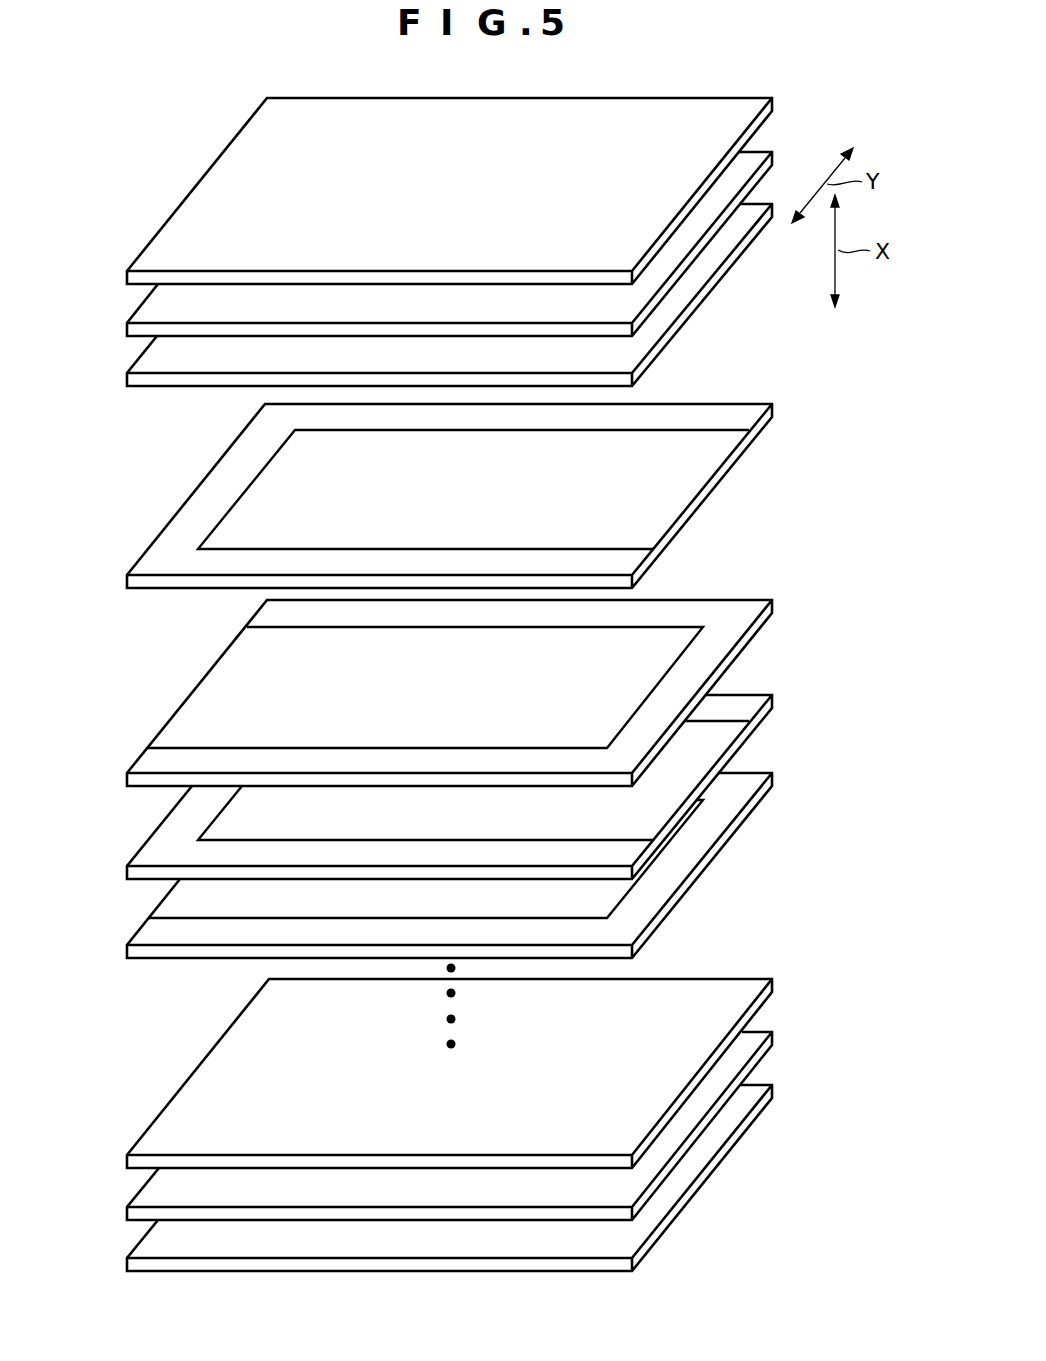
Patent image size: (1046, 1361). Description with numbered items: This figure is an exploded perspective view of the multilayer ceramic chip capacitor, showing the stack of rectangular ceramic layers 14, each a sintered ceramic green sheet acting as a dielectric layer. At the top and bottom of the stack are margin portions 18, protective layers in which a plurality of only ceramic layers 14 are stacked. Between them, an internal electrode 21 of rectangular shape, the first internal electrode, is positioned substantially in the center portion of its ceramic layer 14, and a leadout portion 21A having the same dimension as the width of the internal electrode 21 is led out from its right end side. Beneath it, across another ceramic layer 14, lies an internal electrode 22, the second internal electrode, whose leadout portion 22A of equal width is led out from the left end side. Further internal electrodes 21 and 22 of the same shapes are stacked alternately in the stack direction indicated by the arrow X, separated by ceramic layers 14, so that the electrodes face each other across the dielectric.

The ceramic layer 14 is at (455, 688).
The margin portion 18 is at (111, 263).
The internal electrode 21 is at (513, 622).
The leadout portion 21A is at (690, 484).
The internal electrode 22 is at (382, 774).
The leadout portion 22A is at (141, 784).